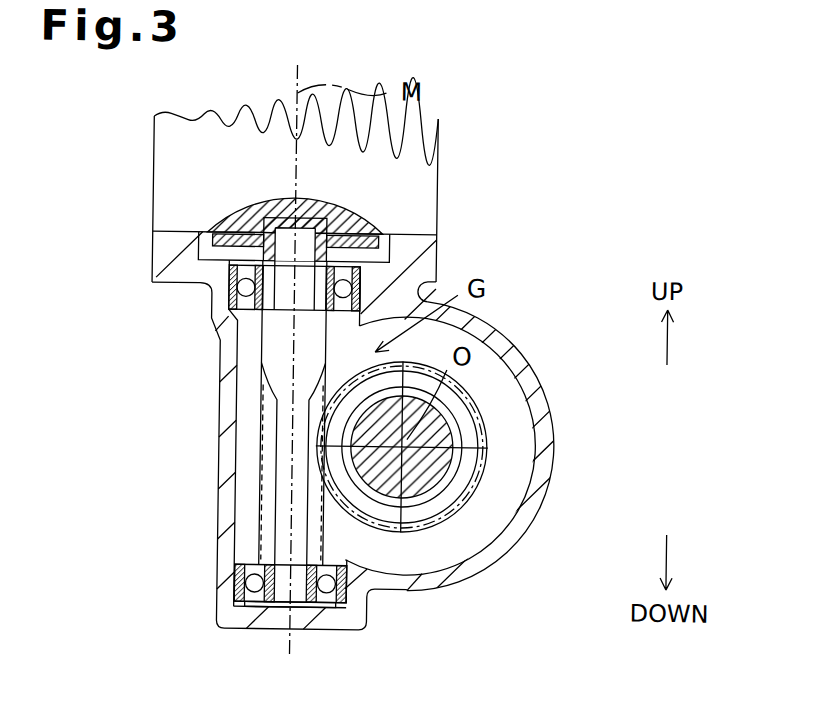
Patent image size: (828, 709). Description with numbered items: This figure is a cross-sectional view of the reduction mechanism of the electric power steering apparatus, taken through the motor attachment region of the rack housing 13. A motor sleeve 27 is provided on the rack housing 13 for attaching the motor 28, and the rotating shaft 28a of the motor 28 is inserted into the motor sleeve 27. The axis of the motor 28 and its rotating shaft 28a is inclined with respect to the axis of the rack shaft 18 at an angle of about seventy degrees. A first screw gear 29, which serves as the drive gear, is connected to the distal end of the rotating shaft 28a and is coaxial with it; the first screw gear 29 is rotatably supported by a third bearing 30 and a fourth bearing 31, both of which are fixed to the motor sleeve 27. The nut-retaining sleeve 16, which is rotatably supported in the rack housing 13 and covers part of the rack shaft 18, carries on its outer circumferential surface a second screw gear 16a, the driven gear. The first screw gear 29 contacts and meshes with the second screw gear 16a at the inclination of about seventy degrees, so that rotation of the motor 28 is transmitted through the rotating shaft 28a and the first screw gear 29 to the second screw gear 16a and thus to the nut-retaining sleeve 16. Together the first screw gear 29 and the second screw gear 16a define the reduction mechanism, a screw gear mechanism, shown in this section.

The rack housing 13 is at (550, 434).
The nut-retaining sleeve 16 is at (474, 406).
The second screw gear 16a is at (475, 482).
The rack shaft 18 is at (438, 475).
The motor sleeve 27 is at (216, 327).
The motor 28 is at (151, 160).
The rotating shaft 28a is at (311, 242).
The first screw gear 29 is at (270, 346).
The third bearing 30 is at (215, 299).
The fourth bearing 31 is at (236, 575).